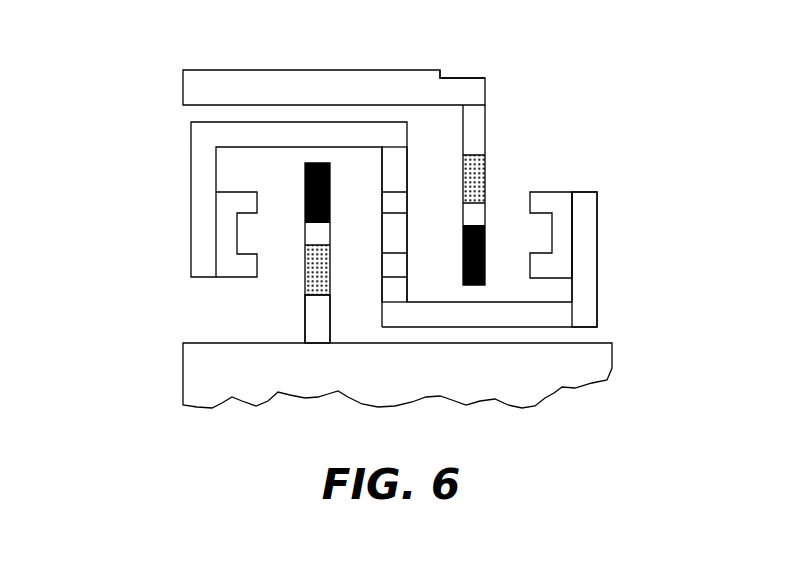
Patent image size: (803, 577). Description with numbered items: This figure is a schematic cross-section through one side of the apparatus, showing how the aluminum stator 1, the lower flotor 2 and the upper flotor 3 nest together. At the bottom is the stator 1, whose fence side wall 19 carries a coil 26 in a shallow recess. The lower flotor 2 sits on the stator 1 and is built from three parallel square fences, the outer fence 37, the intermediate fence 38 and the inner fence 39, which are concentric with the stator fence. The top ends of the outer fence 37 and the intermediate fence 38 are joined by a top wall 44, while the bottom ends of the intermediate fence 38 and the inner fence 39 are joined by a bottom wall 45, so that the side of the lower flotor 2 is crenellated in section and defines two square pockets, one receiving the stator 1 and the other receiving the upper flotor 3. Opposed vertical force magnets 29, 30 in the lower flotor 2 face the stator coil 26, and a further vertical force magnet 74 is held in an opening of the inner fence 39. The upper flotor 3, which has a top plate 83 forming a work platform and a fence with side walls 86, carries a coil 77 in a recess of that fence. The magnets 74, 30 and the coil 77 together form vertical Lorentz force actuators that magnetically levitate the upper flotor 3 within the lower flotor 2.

The stator 1 is at (340, 303).
The lower flotor 2 is at (365, 289).
The upper flotor 3 is at (309, 142).
The side wall 19 is at (320, 343).
The coil 26 is at (305, 275).
The vertical force magnet 29 is at (243, 275).
The vertical force magnet 30 is at (383, 203).
The outer fence 37 is at (191, 162).
The intermediate fence 38 is at (403, 171).
The inner fence 39 is at (597, 237).
The top wall 44 is at (292, 128).
The bottom wall 45 is at (523, 315).
The vertical force magnet 74 is at (558, 193).
The coil 77 is at (488, 180).
The top plate 83 is at (423, 76).
The side wall 86 is at (485, 122).